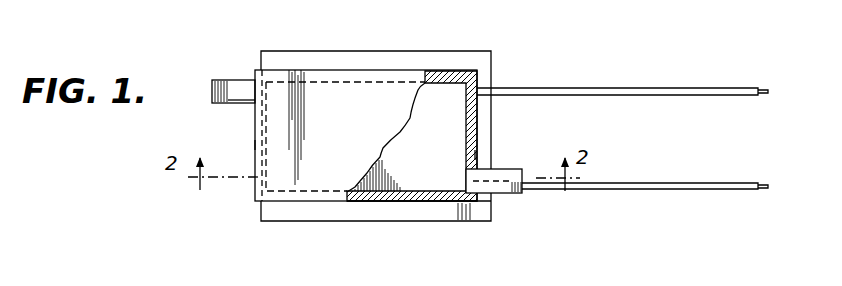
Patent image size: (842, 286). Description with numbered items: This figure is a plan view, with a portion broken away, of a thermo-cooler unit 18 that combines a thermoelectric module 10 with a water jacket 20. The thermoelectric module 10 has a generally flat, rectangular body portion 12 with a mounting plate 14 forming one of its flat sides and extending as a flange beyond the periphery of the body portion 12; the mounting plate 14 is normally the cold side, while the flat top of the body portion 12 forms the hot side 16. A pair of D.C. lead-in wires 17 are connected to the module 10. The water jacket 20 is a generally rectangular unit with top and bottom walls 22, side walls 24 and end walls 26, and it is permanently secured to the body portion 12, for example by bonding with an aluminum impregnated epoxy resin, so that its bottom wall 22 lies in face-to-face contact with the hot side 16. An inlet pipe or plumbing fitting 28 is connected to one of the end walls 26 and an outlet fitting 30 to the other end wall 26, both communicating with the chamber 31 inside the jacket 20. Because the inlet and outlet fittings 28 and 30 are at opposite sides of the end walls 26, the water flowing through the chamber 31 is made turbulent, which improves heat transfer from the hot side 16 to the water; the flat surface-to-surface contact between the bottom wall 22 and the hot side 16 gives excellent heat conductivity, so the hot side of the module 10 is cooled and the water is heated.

The thermoelectric module 10 is at (373, 223).
The body portion 12 is at (479, 119).
The mounting plate 14 is at (432, 217).
The hot side 16 is at (401, 137).
The D.C. lead-in wires 17 is at (738, 97).
The thermo-cooler unit 18 is at (505, 42).
The water jacket 20 is at (330, 203).
The top and bottom walls 22 is at (331, 127).
The side walls 24 is at (454, 73).
The end walls 26 is at (255, 145).
The inlet pipe or plumbing fitting 28 is at (238, 81).
The outlet fitting 30 is at (508, 194).
The chamber 31 is at (400, 126).